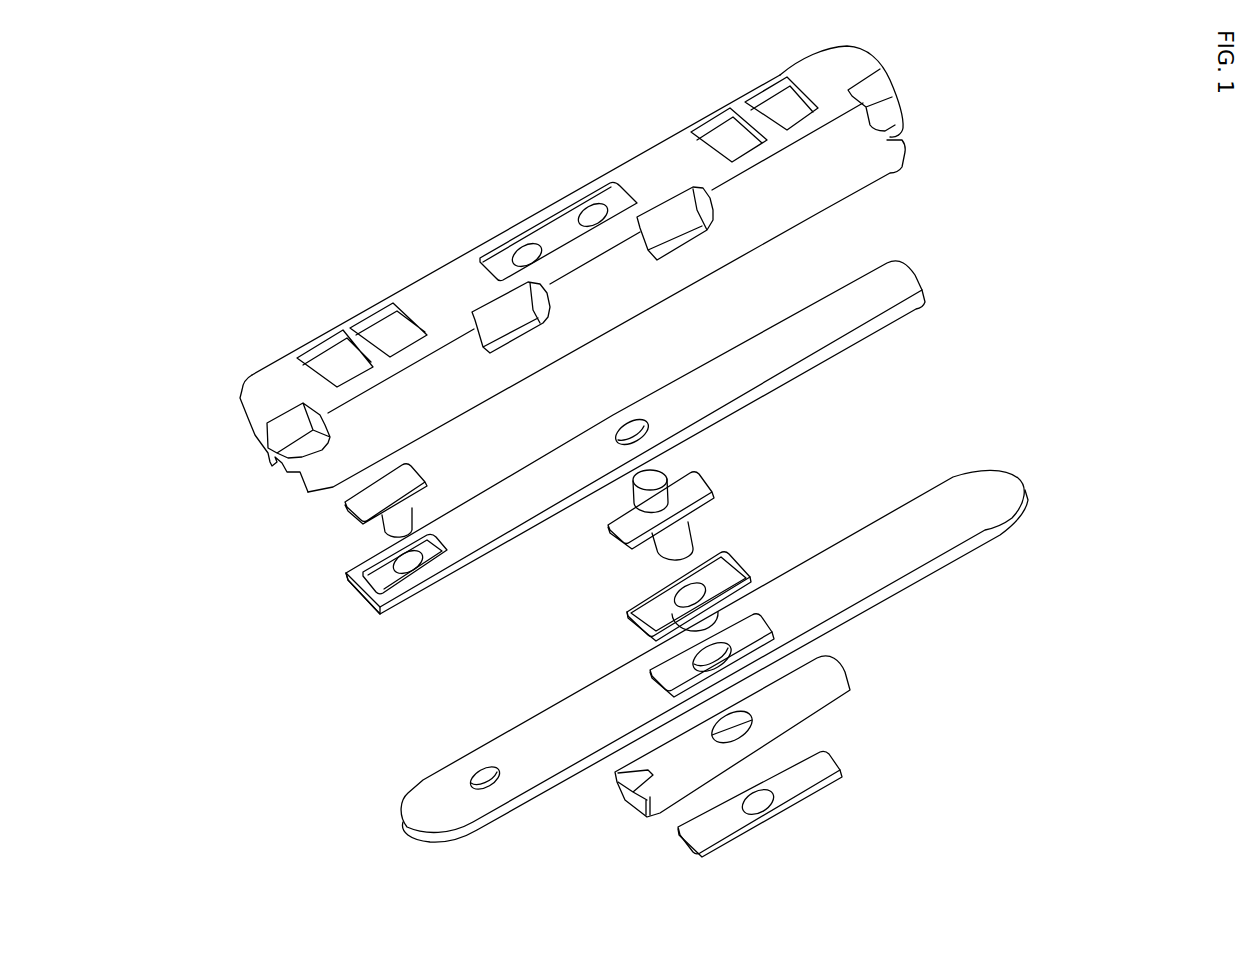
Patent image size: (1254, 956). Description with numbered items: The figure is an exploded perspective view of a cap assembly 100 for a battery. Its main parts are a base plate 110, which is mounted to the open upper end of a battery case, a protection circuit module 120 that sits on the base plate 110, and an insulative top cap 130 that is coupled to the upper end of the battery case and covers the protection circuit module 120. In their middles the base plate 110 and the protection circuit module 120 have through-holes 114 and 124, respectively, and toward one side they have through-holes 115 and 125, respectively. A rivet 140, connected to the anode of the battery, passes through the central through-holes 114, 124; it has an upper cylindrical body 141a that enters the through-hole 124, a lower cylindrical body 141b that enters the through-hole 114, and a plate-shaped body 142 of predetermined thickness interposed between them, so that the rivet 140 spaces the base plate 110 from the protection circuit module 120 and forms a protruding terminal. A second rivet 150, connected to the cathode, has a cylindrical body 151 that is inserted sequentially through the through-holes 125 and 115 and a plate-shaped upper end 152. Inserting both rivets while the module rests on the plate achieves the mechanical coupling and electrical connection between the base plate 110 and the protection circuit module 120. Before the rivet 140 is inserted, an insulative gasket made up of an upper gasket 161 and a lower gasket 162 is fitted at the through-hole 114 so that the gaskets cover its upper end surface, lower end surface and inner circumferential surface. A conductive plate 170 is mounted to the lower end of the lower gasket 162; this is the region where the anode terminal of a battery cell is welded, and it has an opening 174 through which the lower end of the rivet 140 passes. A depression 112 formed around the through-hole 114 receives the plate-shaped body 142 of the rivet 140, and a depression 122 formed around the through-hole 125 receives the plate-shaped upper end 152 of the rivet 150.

The cap assembly 100 is at (238, 93).
The base plate 110 is at (764, 628).
The depression 112 is at (625, 657).
The through-hole 114 is at (692, 655).
The through-hole 115 is at (477, 777).
The protection circuit module 120 is at (662, 445).
The depression 122 is at (365, 595).
The through-hole 124 is at (630, 427).
The through-hole 125 is at (350, 577).
The top cap 130 is at (912, 93).
The rivet 140 is at (672, 504).
The upper cylindrical body 141a is at (617, 490).
The lower cylindrical body 141b is at (662, 545).
The plate-shaped body 142 is at (610, 532).
The rivet 150 is at (378, 471).
The cylindrical body 151 is at (425, 510).
The plate-shaped upper end 152 is at (415, 474).
The upper gasket 161 is at (735, 560).
The lower gasket 162 is at (847, 672).
The conductive plate 170 is at (810, 736).
The opening 174 is at (772, 797).